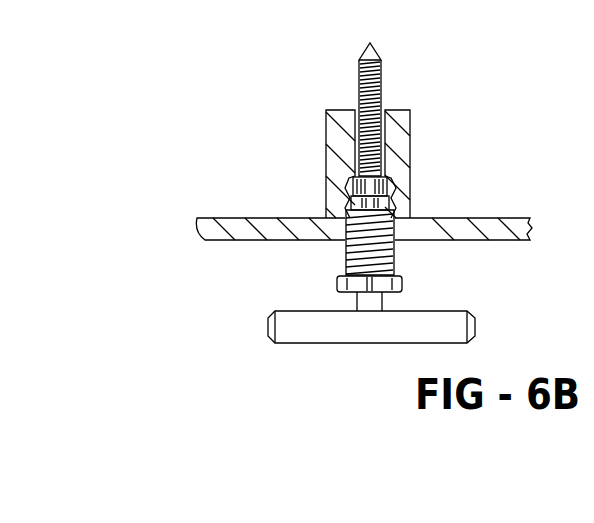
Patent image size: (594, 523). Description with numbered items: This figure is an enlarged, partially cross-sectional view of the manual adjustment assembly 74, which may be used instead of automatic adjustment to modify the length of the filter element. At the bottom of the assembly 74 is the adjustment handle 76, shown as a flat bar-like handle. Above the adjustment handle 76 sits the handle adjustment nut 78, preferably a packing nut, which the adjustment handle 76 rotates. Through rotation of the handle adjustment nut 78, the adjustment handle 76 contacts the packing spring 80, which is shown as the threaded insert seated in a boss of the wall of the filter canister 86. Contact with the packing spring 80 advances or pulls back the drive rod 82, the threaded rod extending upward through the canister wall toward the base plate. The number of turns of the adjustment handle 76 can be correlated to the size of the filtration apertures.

The manual adjustment assembly 74 is at (248, 356).
The adjustment handle 76 is at (463, 313).
The handle adjustment nut 78 is at (405, 275).
The packing spring 80 is at (382, 188).
The drive rod 82 is at (378, 92).
The filter canister 86 is at (508, 217).